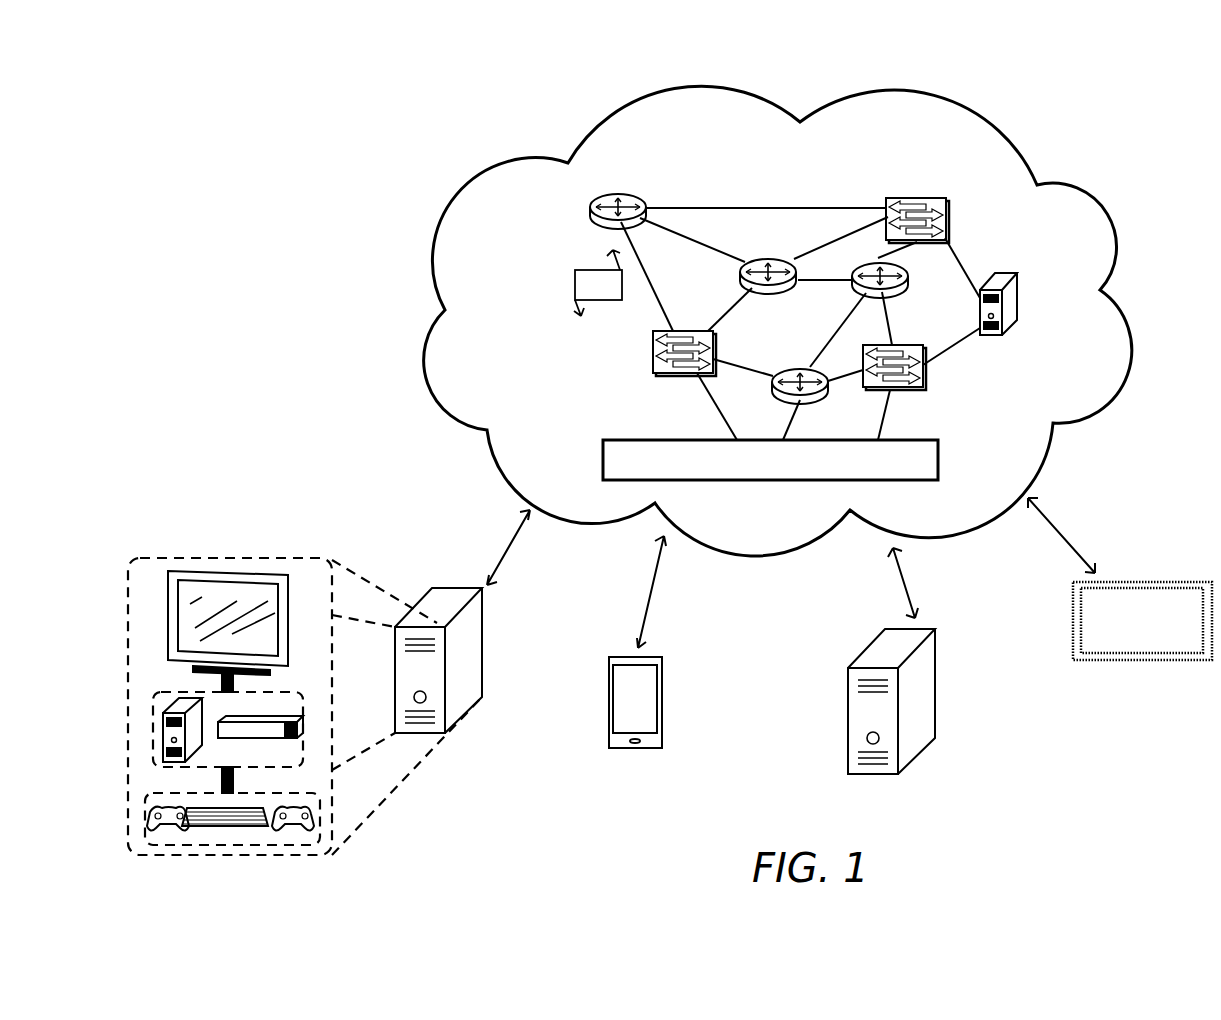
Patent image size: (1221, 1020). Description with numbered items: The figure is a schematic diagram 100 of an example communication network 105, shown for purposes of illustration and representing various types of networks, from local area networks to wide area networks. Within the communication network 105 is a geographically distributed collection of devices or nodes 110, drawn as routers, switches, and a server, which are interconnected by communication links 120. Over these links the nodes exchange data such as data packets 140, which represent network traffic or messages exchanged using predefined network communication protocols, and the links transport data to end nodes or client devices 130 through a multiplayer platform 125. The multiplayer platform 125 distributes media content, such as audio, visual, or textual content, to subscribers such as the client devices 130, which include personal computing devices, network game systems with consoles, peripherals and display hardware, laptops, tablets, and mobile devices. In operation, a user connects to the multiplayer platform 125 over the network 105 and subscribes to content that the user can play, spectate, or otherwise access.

The schematic diagram 100 is at (1111, 58).
The communication network 105 is at (862, 166).
The devices or nodes 110 is at (600, 219).
The communication links 120 is at (650, 283).
The multiplayer platform 125 is at (930, 443).
The client devices 130 is at (455, 703).
The data packets 140 is at (598, 283).